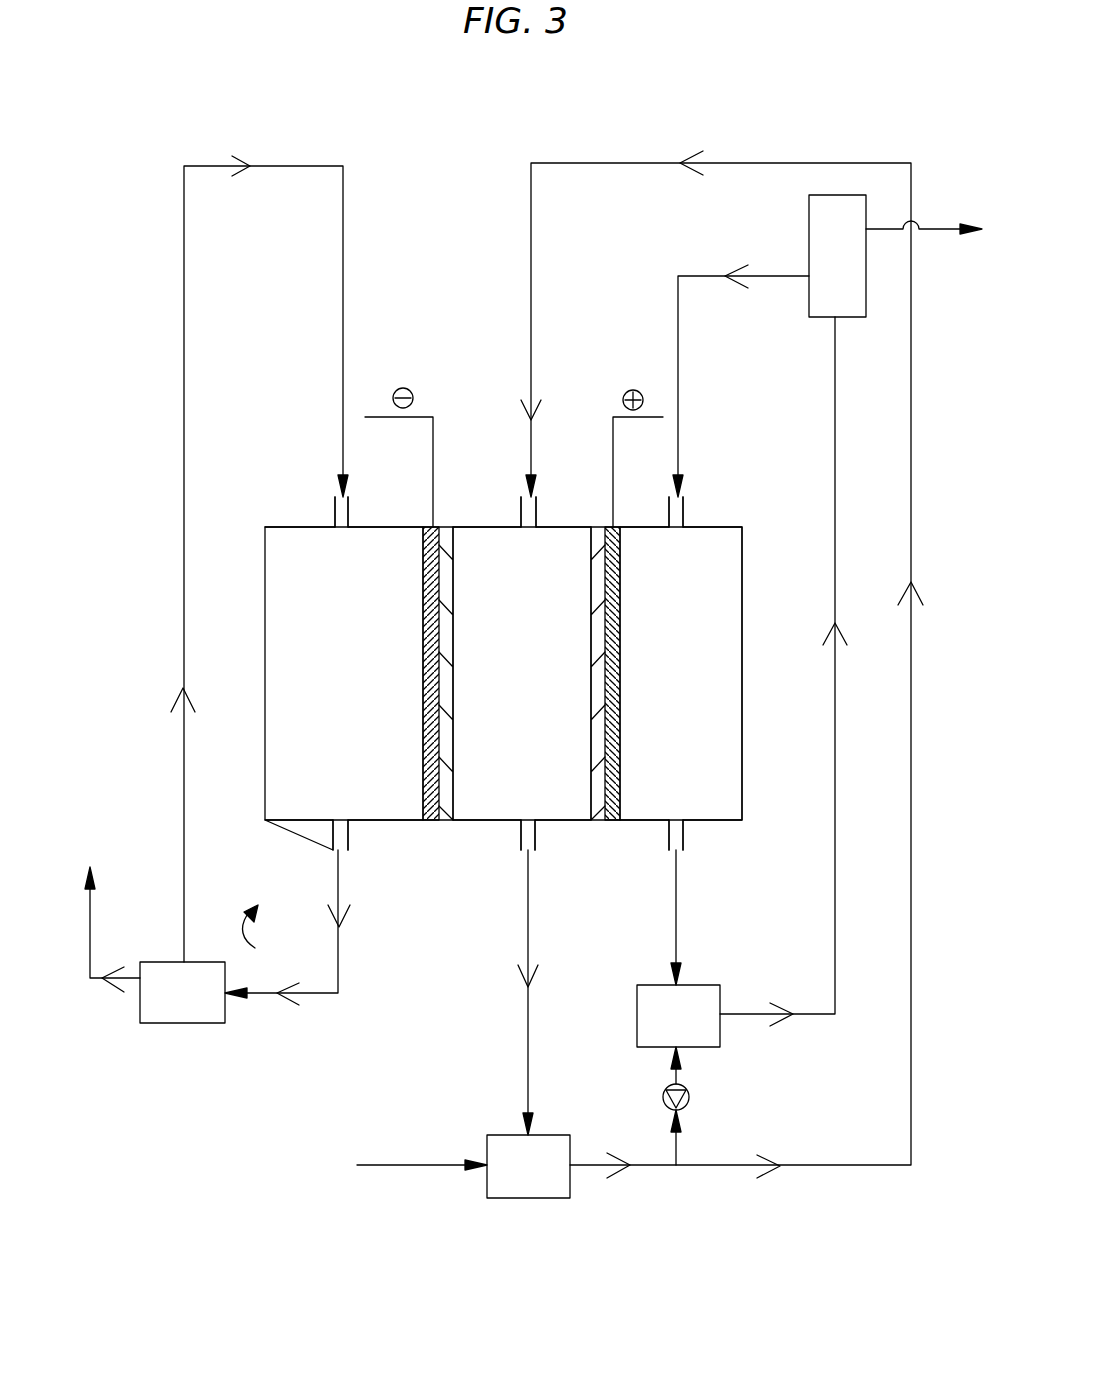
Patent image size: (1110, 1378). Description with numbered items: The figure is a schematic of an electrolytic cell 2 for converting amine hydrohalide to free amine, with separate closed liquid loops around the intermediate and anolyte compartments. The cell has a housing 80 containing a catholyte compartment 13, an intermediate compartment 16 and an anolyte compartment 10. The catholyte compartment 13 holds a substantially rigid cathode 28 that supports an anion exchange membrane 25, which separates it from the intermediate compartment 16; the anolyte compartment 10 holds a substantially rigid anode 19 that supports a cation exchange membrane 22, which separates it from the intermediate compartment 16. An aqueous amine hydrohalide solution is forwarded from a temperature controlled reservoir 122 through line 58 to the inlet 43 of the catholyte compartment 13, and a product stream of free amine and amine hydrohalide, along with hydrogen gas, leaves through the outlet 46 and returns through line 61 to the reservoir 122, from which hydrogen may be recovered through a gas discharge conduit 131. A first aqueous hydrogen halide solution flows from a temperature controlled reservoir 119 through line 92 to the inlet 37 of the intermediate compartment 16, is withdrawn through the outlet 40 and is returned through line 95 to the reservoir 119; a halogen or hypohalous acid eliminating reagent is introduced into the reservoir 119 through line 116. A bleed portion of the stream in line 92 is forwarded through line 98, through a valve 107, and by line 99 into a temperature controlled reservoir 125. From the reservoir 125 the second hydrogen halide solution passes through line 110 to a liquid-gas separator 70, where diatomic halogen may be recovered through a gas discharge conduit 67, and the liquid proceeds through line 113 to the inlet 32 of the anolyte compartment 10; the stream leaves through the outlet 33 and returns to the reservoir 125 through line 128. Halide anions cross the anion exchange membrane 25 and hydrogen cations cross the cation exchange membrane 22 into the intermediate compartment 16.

The electrolytic cell 2 is at (259, 934).
The anolyte compartment 10 is at (690, 698).
The catholyte compartment 13 is at (366, 698).
The intermediate compartment 16 is at (537, 698).
The anode 19 is at (607, 822).
The cation exchange membrane 22 is at (593, 822).
The anion exchange membrane 25 is at (445, 822).
The cathode 28 is at (433, 822).
The inlet 32 is at (684, 513).
The outlet 33 is at (679, 838).
The inlet 37 is at (536, 512).
The outlet 40 is at (521, 833).
The inlet 43 is at (337, 512).
The outlet 46 is at (333, 830).
The line 58 is at (343, 333).
The line 61 is at (317, 993).
The gas discharge conduit 67 is at (945, 233).
The liquid-gas separator 70 is at (832, 229).
The housing 80 is at (742, 787).
The line 92 is at (531, 347).
The line 95 is at (528, 1025).
The line 98 is at (676, 1152).
The line 99 is at (672, 1078).
The valve 107 is at (690, 1103).
The line 110 is at (835, 838).
The line 113 is at (778, 276).
The line 116 is at (430, 1165).
The temperature controlled reservoir 119 is at (527, 1183).
The temperature controlled reservoir 122 is at (165, 1010).
The temperature controlled reservoir 125 is at (695, 1033).
The line 128 is at (676, 942).
The gas discharge conduit 131 is at (90, 933).